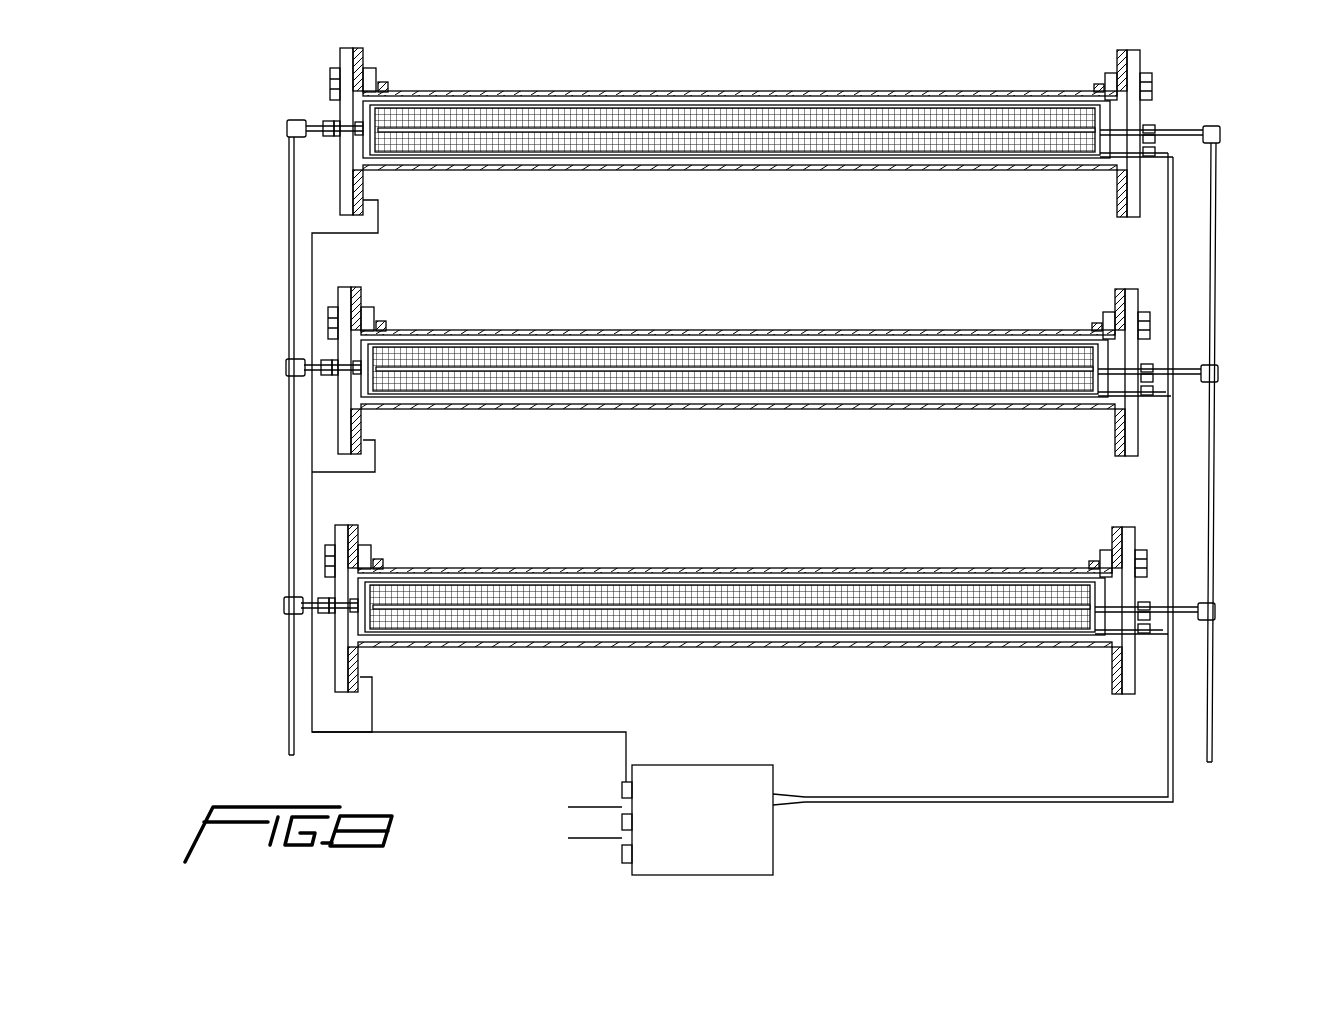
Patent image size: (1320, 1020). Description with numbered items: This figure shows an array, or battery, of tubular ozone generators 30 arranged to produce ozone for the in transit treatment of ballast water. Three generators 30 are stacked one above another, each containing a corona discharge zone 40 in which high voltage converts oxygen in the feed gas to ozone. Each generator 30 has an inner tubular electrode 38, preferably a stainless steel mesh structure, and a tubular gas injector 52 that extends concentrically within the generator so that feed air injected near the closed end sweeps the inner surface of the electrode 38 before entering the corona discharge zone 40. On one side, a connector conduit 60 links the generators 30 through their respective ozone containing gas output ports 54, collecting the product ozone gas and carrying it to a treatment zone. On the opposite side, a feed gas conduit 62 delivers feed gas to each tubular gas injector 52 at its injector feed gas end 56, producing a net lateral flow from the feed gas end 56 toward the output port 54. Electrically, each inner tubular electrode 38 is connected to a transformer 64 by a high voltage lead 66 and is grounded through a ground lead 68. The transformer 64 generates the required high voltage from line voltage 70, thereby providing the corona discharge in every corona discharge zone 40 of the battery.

The ozone generator 30 is at (738, 367).
The inner tubular electrode 38 is at (734, 411).
The corona discharge zone 40 is at (737, 343).
The tubular gas injector 52 is at (732, 339).
The ozone containing gas output port 54 is at (381, 329).
The injector feed gas end 56 is at (1205, 126).
The connector conduit 60 is at (290, 528).
The feed gas conduit 62 is at (1213, 742).
The transformer 64 is at (773, 828).
The high voltage lead 66 is at (1035, 797).
The ground lead 68 is at (462, 738).
The line voltage 70 is at (572, 838).